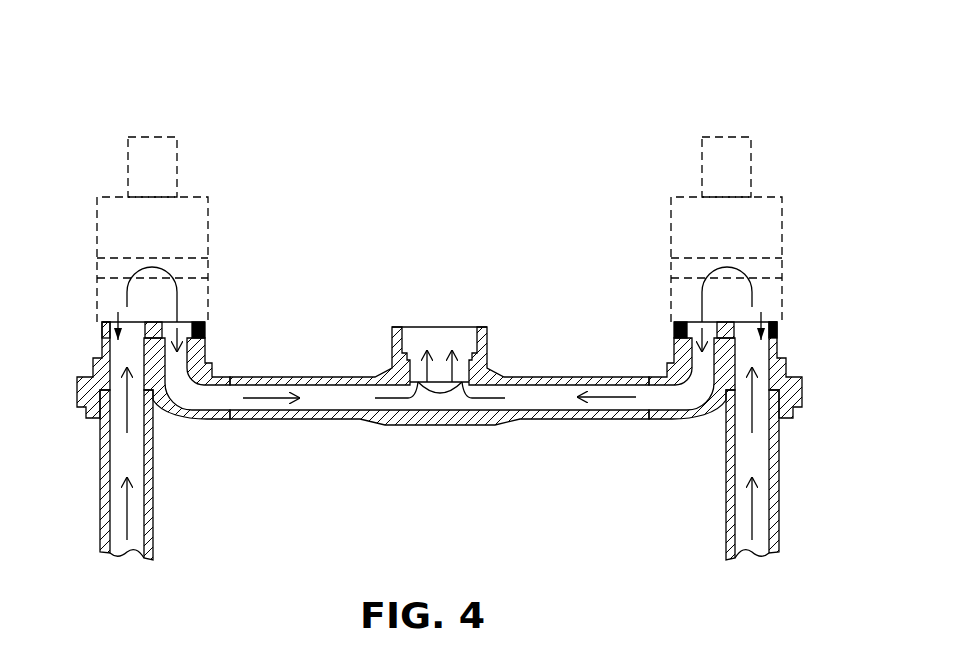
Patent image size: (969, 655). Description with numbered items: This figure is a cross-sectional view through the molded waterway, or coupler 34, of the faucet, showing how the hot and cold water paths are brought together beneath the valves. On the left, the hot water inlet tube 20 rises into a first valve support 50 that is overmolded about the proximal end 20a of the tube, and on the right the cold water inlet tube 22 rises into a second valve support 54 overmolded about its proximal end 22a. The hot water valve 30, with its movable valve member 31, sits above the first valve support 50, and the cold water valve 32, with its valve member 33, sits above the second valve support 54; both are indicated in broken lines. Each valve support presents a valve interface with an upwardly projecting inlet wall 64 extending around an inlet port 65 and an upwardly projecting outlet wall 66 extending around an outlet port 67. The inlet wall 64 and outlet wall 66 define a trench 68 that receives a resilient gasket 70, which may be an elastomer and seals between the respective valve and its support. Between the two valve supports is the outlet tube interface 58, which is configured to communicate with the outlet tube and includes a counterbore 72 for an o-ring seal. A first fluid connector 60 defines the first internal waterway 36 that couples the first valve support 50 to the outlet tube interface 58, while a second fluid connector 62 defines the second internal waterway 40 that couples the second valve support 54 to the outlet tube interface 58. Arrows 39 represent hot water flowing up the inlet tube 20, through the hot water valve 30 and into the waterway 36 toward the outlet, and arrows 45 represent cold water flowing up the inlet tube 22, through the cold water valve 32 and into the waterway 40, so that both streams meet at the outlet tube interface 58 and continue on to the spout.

The hot water inlet tube 20 is at (102, 503).
The proximal end of hot water inlet tube 20a is at (159, 426).
The cold water inlet tube 22 is at (778, 482).
The proximal end of cold water inlet tube 22a is at (720, 426).
The hot water valve 30 is at (100, 192).
The valve member 31 is at (190, 253).
The cold water valve 32 is at (777, 192).
The valve member 33 is at (692, 268).
The coupler 34 is at (630, 104).
The first internal waterway 36 is at (332, 400).
The arrows 39 is at (127, 515).
The second internal waterway 40 is at (549, 408).
The arrows 45 is at (752, 517).
The first valve support 50 is at (77, 390).
The second valve support 54 is at (803, 390).
The outlet tube interface 58 is at (484, 324).
The first fluid connector 60 is at (331, 377).
The second fluid connector 62 is at (552, 377).
The inlet wall 64 is at (127, 307).
The inlet port 65 is at (106, 322).
The outlet wall 66 is at (196, 321).
The outlet port 67 is at (184, 321).
The trench 68 is at (155, 318).
The resilient gasket 70 is at (206, 326).
The counterbore 72 is at (414, 327).